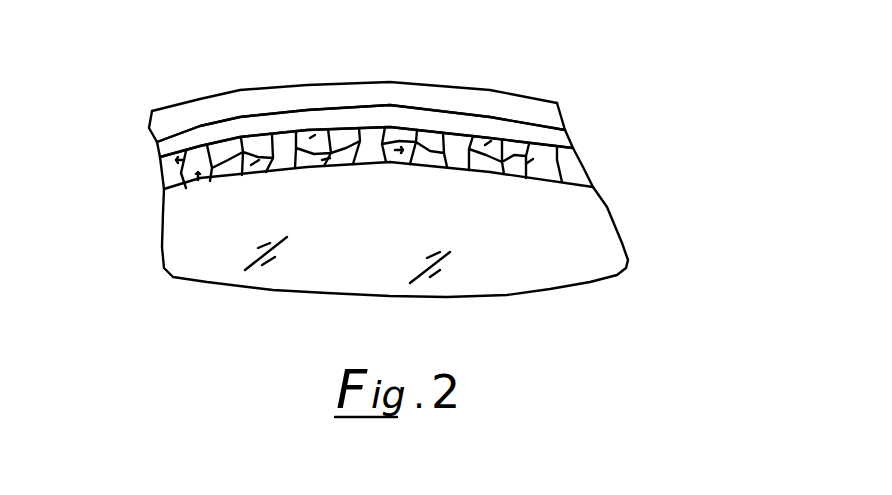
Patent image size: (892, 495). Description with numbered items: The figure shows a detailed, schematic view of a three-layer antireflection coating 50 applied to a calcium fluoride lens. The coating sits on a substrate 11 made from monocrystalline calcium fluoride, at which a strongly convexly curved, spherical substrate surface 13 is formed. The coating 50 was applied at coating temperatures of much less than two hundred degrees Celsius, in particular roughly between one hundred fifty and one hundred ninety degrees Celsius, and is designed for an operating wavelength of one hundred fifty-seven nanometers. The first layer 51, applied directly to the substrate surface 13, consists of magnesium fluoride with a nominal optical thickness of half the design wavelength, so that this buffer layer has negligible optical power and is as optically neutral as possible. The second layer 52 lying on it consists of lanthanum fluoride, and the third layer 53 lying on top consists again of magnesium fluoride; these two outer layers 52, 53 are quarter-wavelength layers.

The substrate 11 is at (613, 247).
The substrate surface 13 is at (310, 168).
The antireflection coating 50 is at (407, 121).
The first layer 51 is at (583, 165).
The second layer 52 is at (157, 148).
The third layer 53 is at (557, 103).